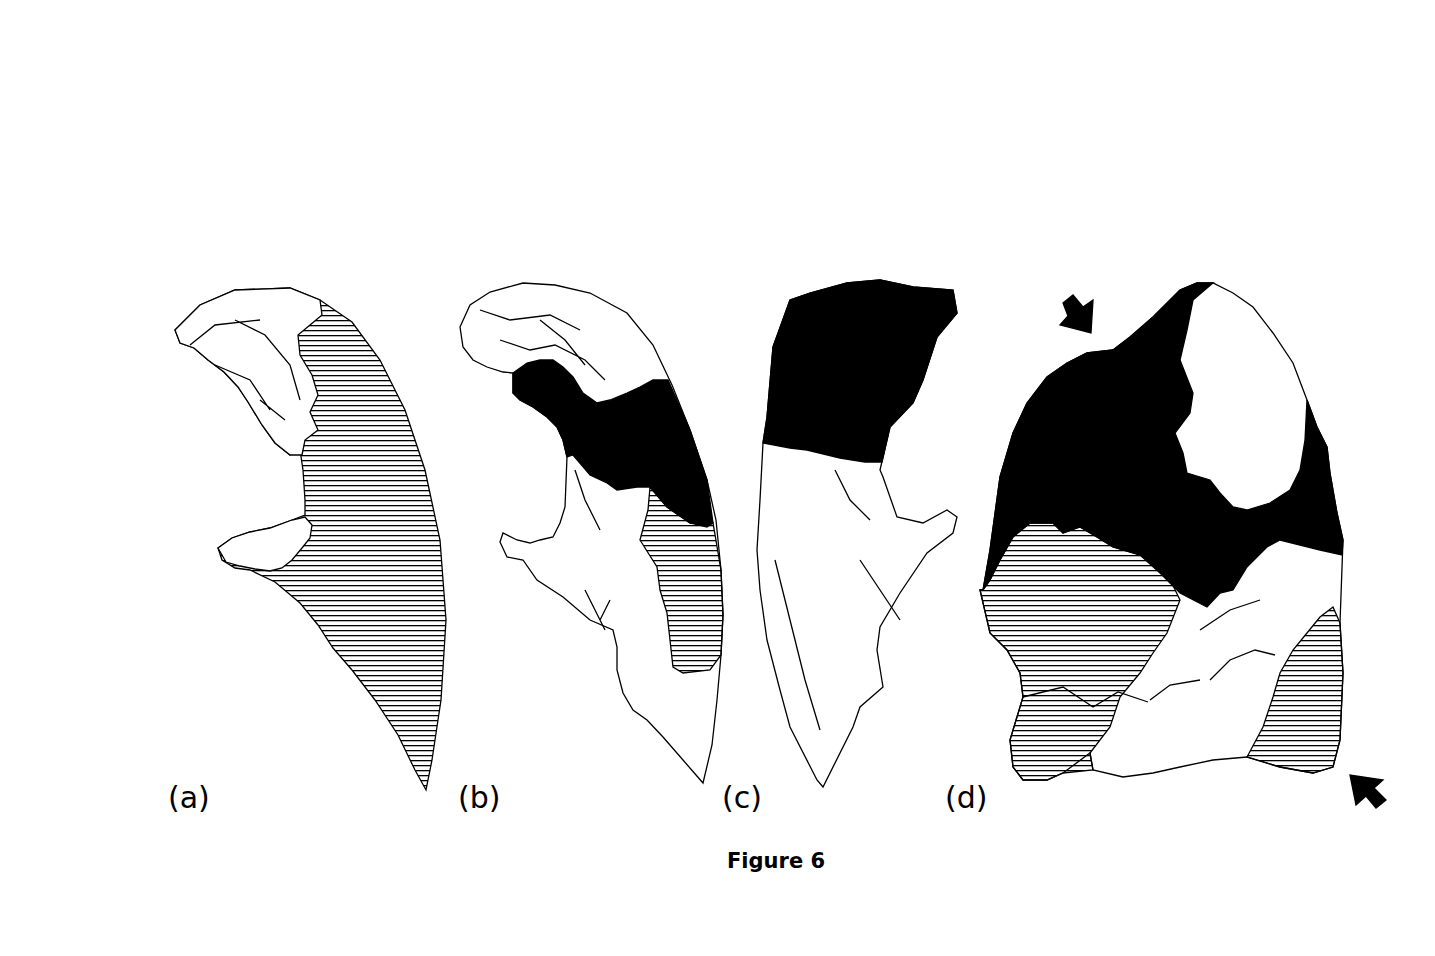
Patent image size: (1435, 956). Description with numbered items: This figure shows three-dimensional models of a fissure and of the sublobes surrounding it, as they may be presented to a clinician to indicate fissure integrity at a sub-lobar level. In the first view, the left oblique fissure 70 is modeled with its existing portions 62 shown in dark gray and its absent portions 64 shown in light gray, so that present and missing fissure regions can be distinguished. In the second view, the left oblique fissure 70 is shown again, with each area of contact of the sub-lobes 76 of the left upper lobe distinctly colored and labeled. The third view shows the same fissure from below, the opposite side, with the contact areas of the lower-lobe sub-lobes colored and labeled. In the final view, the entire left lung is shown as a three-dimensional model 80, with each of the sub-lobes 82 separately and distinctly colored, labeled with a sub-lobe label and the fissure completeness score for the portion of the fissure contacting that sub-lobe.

The existing portions 62 is at (378, 787).
The absent portions 64 is at (300, 225).
The left oblique fissure 70 is at (160, 437).
The sub-lobes of the left upper lobe 76 is at (511, 312).
The lung surface model 80 is at (1355, 362).
The sub-lobes 82 is at (1019, 433).